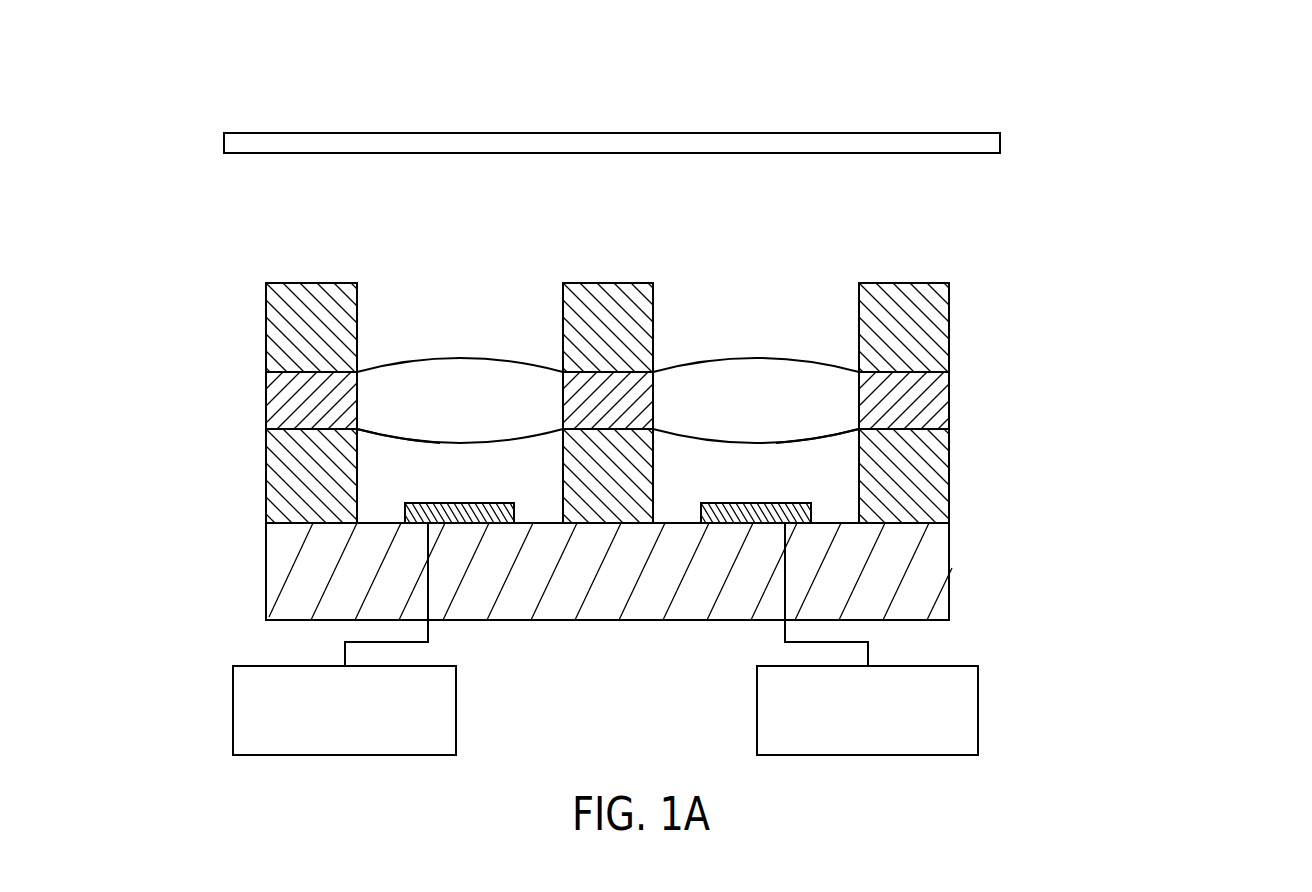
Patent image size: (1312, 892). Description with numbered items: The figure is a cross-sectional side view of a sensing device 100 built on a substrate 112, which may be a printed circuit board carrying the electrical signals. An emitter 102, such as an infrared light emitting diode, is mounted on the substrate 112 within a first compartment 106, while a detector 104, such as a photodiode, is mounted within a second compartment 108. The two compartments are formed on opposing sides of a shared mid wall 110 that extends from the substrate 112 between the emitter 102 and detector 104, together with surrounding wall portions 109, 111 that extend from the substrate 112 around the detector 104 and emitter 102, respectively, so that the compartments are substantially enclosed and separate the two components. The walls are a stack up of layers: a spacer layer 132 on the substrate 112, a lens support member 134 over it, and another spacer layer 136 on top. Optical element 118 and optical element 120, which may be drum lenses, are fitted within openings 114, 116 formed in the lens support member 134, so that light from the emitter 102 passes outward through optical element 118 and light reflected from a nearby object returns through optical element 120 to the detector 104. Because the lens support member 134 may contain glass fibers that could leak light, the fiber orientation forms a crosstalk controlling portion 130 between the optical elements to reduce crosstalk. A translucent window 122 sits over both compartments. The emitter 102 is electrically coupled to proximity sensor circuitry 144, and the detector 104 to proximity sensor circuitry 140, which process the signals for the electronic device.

The sensing device 100 is at (890, 75).
The emitter 102 is at (811, 504).
The detector 104 is at (405, 504).
The first compartment 106 is at (826, 235).
The second compartment 108 is at (400, 240).
The surrounding wall portion 109 is at (255, 400).
The mid wall 110 is at (627, 359).
The surrounding wall portion 111 is at (1069, 403).
The substrate 112 is at (949, 572).
The opening 114 is at (859, 430).
The opening 116 is at (357, 430).
The optical element 118 is at (797, 357).
The optical element 120 is at (420, 357).
The window 122 is at (1000, 143).
The crosstalk controlling portion 130 is at (655, 370).
The spacer layer 132 is at (948, 483).
The lens support member 134 is at (948, 390).
The spacer layer 136 is at (948, 320).
The proximity sensor circuitry 140 is at (233, 697).
The proximity sensor circuitry 144 is at (978, 690).